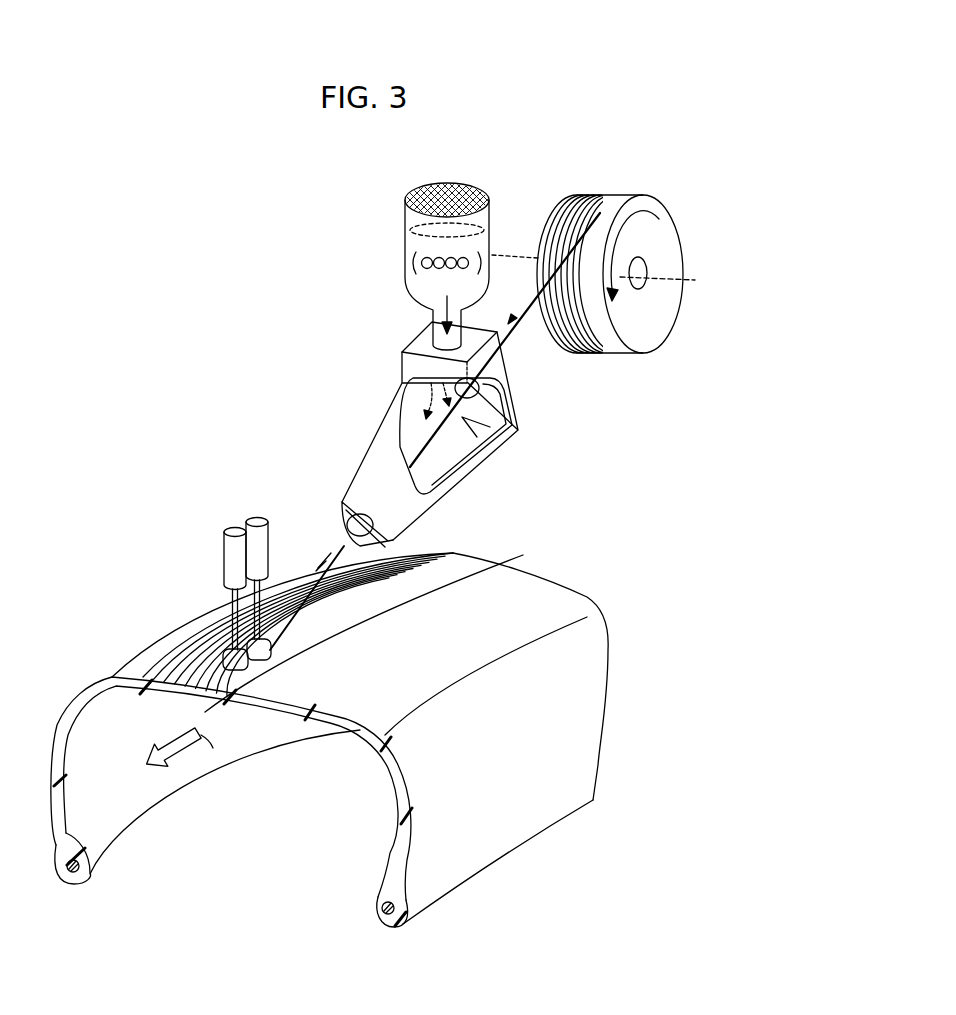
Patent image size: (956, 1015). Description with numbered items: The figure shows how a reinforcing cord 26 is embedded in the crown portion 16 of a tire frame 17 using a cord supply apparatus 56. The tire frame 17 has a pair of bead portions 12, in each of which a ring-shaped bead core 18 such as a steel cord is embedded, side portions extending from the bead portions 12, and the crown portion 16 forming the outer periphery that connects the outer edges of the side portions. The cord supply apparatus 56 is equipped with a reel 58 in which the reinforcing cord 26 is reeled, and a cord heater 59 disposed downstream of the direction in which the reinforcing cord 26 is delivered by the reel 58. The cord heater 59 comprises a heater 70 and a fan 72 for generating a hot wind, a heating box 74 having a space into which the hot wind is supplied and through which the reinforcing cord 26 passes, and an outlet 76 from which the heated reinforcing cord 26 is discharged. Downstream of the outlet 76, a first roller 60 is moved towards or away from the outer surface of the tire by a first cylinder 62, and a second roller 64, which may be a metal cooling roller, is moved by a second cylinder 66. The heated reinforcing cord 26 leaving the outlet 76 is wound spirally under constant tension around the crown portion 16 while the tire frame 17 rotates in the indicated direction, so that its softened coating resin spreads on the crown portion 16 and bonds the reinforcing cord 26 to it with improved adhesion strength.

The bead portion 12 is at (68, 884).
The crown portion 16 is at (173, 657).
The tire frame 17 is at (394, 798).
The bead core 18 is at (92, 874).
The reinforcing cord 26 is at (479, 444).
The cord supply apparatus 56 is at (312, 290).
The reel 58 is at (626, 328).
The cord heater 59 is at (533, 444).
The first roller 60 is at (278, 664).
The first cylinder 62 is at (279, 527).
The second roller 64 is at (250, 672).
The second cylinder 66 is at (219, 548).
The heater 70 is at (404, 275).
The fan 72 is at (490, 228).
The heating box 74 is at (383, 420).
The outlet 76 is at (342, 546).